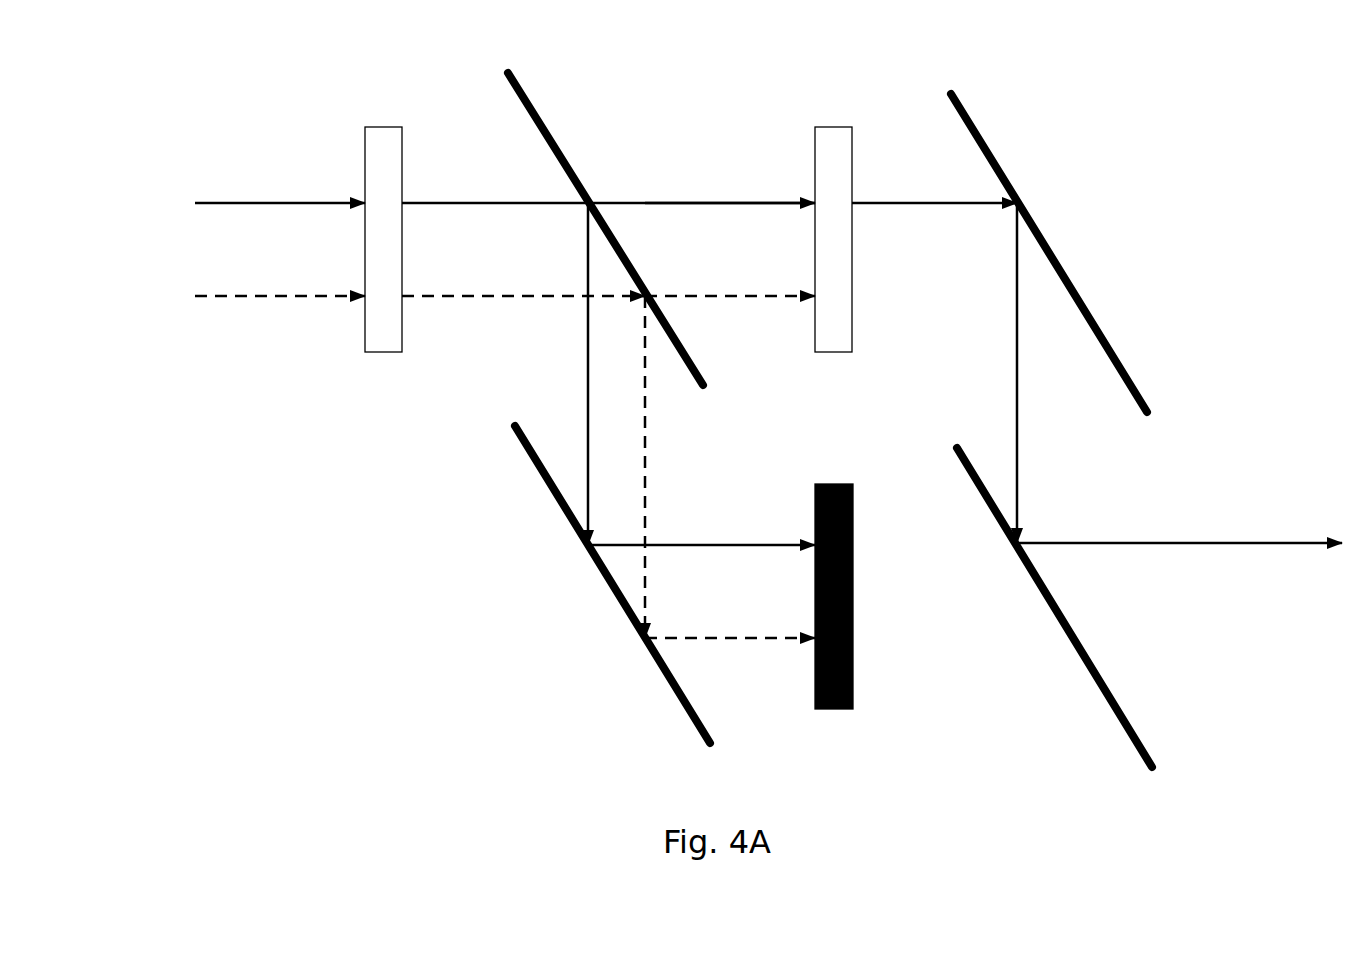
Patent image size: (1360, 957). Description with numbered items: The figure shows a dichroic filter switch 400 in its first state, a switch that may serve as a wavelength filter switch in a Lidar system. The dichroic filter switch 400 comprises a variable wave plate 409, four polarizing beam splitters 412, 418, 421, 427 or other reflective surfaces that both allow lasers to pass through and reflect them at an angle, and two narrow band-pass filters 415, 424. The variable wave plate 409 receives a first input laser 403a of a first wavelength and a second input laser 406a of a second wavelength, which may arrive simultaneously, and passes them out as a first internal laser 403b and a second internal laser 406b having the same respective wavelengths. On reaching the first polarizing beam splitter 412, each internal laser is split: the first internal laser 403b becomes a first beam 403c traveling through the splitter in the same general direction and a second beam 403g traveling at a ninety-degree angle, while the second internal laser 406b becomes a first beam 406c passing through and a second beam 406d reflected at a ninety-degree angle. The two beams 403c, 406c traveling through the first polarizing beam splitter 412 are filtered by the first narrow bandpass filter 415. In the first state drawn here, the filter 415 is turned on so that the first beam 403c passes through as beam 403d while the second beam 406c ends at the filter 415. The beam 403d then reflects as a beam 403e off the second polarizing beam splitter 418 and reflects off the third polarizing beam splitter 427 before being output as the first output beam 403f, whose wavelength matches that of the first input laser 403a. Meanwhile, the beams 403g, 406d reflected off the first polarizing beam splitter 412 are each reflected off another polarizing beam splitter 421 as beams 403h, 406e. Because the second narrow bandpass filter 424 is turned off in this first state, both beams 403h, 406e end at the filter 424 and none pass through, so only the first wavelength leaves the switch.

The dichroic filter switch 400 is at (1272, 114).
The first input laser 403a is at (280, 173).
The first internal laser 403b is at (608, 173).
The first beam 403c is at (730, 173).
The beam 403d is at (934, 173).
The beam 403e is at (1046, 373).
The first output beam 403f is at (1179, 515).
The second beam 403g is at (586, 398).
The beam 403h is at (701, 516).
The second input laser 406a is at (280, 266).
The second internal laser 406b is at (523, 266).
The first beam 406c is at (730, 266).
The second beam 406d is at (643, 466).
The beam 406e is at (730, 609).
The variable wave plate 409 is at (401, 210).
The first polarizing beam splitter 412 is at (605, 229).
The first narrow bandpass filter 415 is at (851, 210).
The second polarizing beam splitter 418 is at (1049, 253).
The polarizing beam splitter 421 is at (545, 490).
The second narrow bandpass filter 424 is at (842, 565).
The third polarizing beam splitter 427 is at (1054, 579).